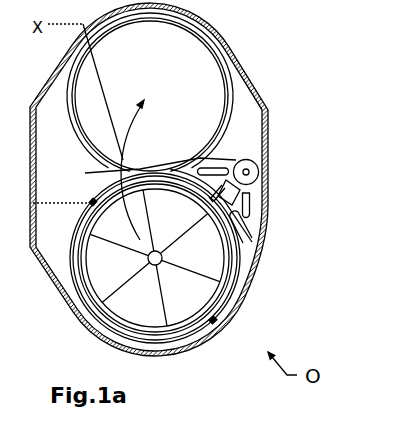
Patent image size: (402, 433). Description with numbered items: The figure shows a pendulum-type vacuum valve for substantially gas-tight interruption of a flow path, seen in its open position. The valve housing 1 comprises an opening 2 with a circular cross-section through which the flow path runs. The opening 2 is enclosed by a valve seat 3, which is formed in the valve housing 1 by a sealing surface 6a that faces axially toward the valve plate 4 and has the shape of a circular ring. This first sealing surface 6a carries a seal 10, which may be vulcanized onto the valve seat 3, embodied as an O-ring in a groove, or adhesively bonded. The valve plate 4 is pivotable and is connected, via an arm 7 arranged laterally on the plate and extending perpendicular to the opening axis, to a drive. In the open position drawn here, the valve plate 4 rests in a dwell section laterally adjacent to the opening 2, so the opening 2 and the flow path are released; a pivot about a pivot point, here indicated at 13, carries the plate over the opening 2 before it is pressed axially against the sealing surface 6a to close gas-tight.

The valve housing 1 is at (245, 123).
The opening 2 is at (203, 72).
The valve seat 3 is at (228, 92).
The sealing surface 6a is at (228, 92).
The seal 10 is at (222, 78).
The pivot pin 13 is at (248, 171).
The arm 7 is at (253, 218).
The valve plate 4 is at (215, 262).